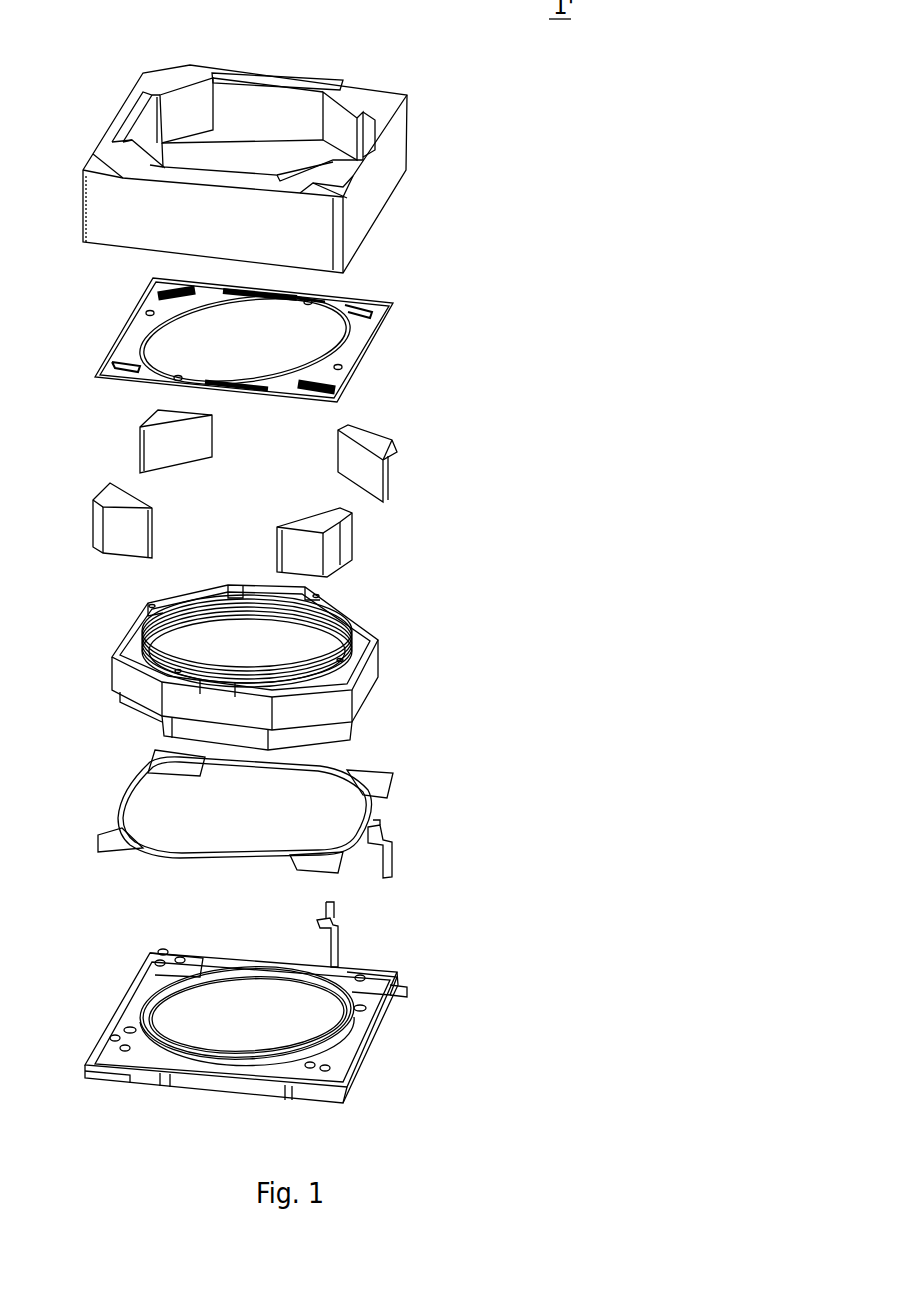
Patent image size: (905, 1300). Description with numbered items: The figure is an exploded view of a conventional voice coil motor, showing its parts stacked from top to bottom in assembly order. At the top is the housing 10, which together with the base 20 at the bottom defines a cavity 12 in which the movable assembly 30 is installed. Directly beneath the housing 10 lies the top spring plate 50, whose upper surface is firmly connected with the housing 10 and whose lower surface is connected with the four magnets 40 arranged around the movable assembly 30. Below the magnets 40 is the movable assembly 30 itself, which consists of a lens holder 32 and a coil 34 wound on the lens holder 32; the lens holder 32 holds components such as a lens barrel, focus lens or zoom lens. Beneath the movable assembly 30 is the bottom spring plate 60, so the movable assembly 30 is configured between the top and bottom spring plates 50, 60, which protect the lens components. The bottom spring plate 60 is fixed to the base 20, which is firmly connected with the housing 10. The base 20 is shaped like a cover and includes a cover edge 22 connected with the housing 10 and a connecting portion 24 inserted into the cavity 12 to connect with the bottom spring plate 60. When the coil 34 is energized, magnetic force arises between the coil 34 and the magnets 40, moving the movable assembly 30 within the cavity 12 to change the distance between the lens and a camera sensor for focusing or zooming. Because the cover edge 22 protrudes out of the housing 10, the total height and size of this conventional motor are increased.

The housing 10 is at (380, 170).
The cavity 12 is at (241, 161).
The base 20 is at (347, 1002).
The cover edge 22 is at (350, 1092).
The connecting portion 24 is at (400, 978).
The movable assembly 30 is at (359, 651).
The lens holder 32 is at (363, 620).
The coil 34 is at (367, 668).
The magnets 40 is at (345, 548).
The top spring plate 50 is at (395, 303).
The bottom spring plate 60 is at (387, 773).